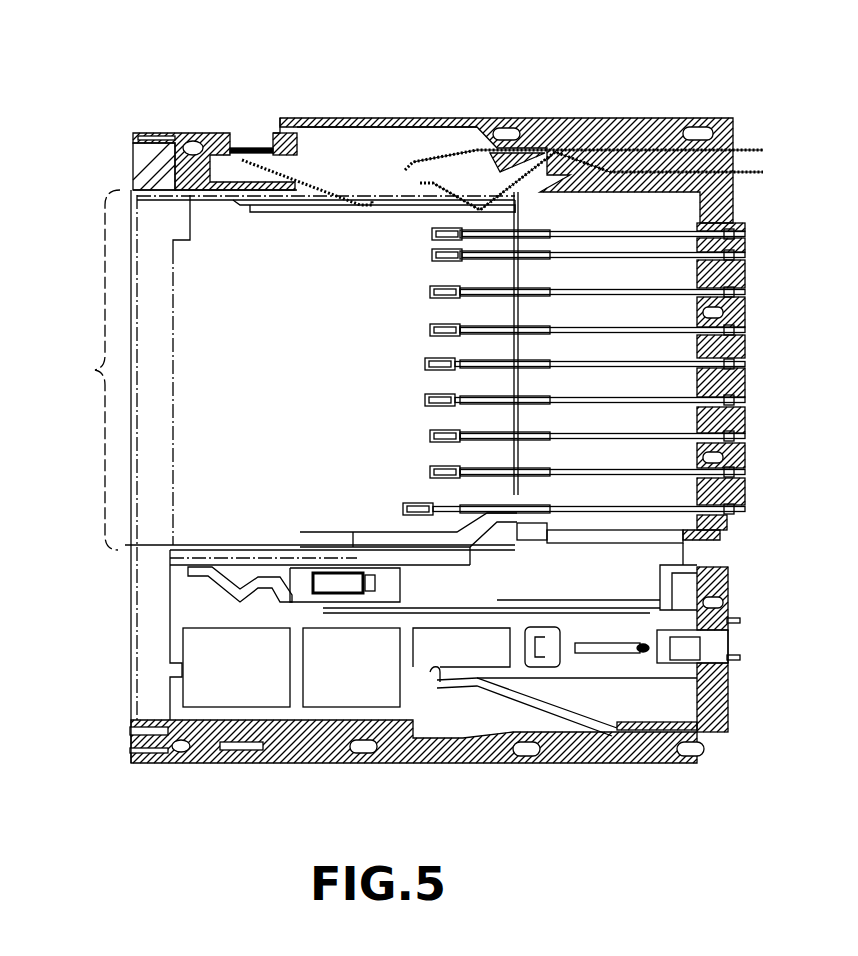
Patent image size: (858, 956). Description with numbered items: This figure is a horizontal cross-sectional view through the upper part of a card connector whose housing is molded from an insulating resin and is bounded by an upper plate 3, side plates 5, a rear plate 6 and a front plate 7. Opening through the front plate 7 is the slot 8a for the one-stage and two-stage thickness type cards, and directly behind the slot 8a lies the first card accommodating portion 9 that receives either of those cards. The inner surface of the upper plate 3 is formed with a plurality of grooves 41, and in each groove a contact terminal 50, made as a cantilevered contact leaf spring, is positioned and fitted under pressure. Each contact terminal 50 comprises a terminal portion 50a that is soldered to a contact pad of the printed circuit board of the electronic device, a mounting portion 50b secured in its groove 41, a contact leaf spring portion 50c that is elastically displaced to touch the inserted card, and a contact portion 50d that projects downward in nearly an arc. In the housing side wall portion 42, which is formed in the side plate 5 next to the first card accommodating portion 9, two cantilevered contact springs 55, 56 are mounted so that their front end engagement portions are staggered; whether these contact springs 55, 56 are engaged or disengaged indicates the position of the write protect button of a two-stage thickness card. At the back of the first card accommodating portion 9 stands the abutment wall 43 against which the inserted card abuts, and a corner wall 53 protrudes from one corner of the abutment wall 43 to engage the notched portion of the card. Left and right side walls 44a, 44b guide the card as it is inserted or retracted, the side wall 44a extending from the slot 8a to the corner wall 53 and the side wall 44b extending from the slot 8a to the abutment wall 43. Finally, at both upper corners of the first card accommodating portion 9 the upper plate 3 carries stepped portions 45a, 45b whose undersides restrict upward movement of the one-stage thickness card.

The upper plate 3 is at (613, 563).
The side plates 5 is at (583, 126).
The rear plate 6 is at (722, 712).
The front plate 7 is at (130, 633).
The slot 8a is at (87, 370).
The first card accommodating portion 9 is at (318, 243).
The grooves 41 is at (667, 227).
The housing side wall portion 42 is at (467, 140).
The abutment wall 43 is at (570, 280).
The side wall 44a is at (204, 543).
The side wall 44b is at (208, 200).
The stepped portion 45a is at (283, 545).
The stepped portion 45b is at (283, 205).
The contact terminals 50 is at (673, 398).
The terminal portion 50a is at (740, 292).
The mounting portion 50b is at (740, 260).
The contact leaf spring portion 50c is at (468, 296).
The contact portion 50d is at (462, 290).
The corner wall 53 is at (477, 523).
The contact spring 55 is at (406, 150).
The contact spring 56 is at (538, 150).